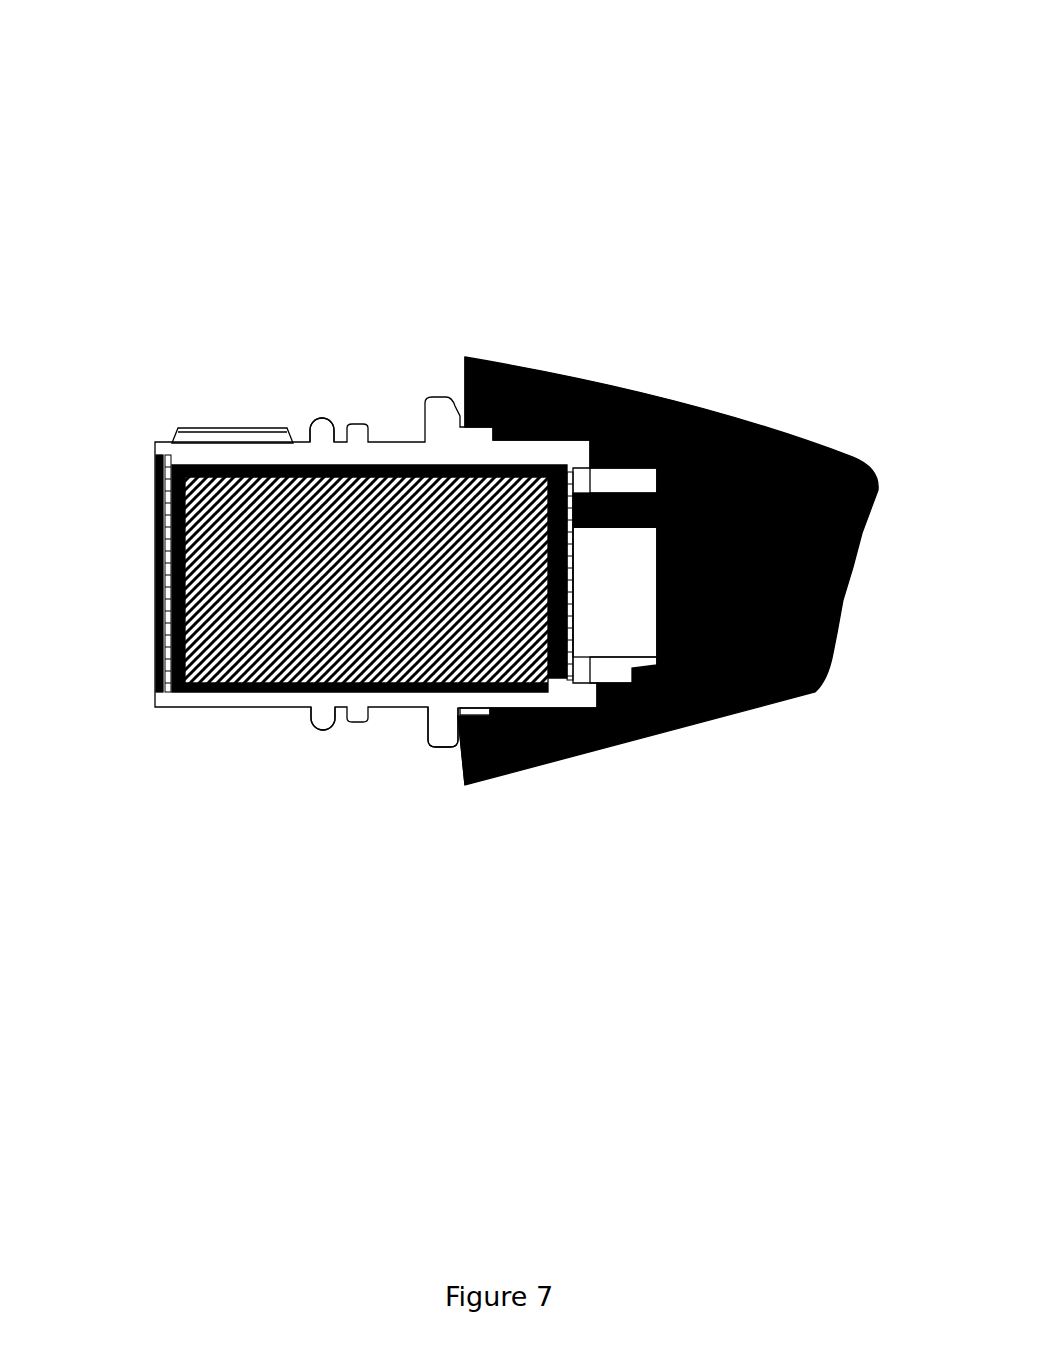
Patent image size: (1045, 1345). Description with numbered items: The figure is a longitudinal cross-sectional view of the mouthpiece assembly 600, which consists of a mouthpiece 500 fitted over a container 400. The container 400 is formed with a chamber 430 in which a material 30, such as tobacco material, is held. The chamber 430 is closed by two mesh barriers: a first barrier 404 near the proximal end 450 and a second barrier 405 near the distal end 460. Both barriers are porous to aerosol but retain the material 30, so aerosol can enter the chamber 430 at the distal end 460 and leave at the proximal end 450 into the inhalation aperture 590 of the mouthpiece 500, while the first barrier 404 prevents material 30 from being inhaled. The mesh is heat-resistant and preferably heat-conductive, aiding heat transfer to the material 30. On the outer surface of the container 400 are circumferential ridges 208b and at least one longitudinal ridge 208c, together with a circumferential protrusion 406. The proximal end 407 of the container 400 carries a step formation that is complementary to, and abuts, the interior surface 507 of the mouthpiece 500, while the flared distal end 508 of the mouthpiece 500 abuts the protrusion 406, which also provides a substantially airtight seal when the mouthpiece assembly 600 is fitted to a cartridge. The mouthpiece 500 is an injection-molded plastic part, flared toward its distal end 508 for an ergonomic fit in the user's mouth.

The mouthpiece assembly 600 is at (405, 78).
The mouthpiece 500 is at (694, 938).
The inhalation aperture 590 is at (795, 585).
The distal end of the mouthpiece 508 is at (460, 370).
The interior surface of the mouthpiece housing 507 is at (670, 485).
The proximal end of the container 407 is at (637, 477).
The container 400 is at (198, 895).
The material 30 is at (210, 650).
The chamber 430 is at (241, 513).
The second barrier 405 is at (160, 568).
The distal end 460 is at (137, 594).
The longitudinal ridge 208c is at (228, 435).
The circumferential ridge 208b is at (315, 732).
The protrusion 406 is at (428, 750).
The proximal end 450 is at (590, 552).
The first barrier 404 is at (567, 583).